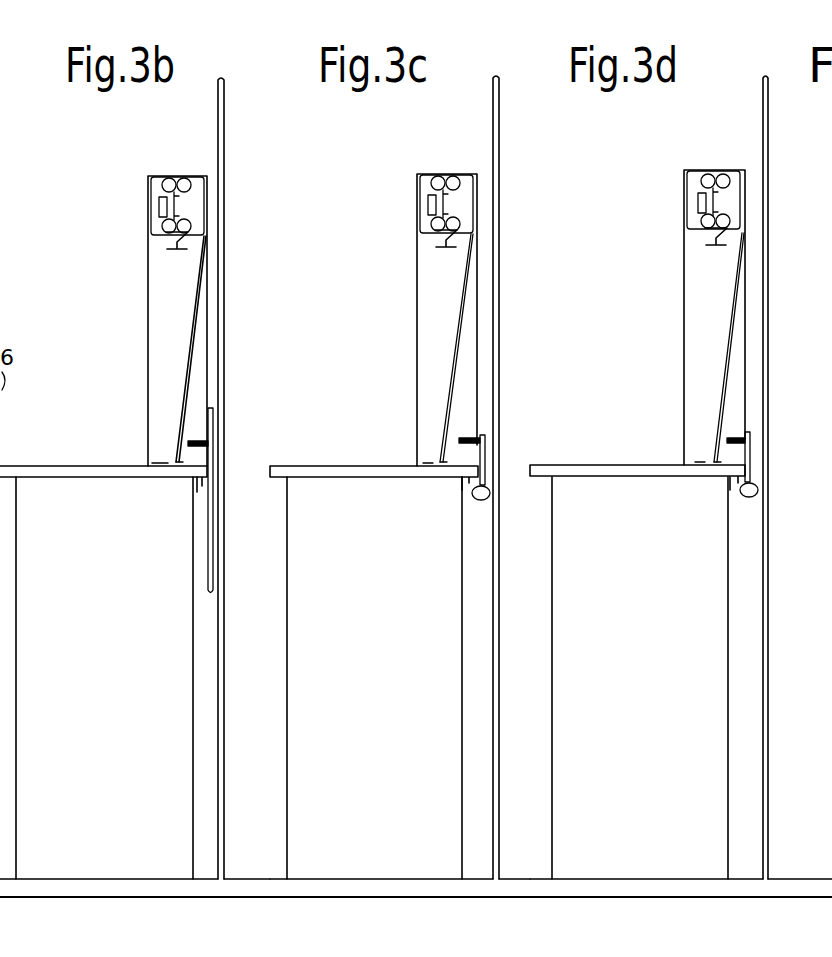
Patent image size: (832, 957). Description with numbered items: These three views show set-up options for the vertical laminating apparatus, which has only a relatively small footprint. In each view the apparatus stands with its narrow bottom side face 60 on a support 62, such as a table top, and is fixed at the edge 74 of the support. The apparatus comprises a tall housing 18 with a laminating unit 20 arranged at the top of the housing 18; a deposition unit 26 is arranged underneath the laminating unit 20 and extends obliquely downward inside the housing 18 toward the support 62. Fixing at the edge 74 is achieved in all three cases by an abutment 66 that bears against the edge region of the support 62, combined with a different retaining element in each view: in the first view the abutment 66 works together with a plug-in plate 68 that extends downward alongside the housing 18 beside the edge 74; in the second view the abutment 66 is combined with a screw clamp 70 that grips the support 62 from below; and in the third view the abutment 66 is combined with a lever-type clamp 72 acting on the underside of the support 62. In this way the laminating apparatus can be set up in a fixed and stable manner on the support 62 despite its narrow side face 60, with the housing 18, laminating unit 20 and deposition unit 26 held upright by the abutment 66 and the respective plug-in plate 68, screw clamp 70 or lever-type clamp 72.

In FIG. 3B, the housing 18 is at (148, 306).
In FIG. 3C, the housing 18 is at (417, 303).
In FIG. 3D, the housing 18 is at (684, 304).
In FIG. 3B, the laminating unit 20 is at (158, 205).
In FIG. 3C, the laminating unit 20 is at (427, 205).
In FIG. 3D, the laminating unit 20 is at (696, 204).
In FIG. 3B, the deposition unit 26 is at (190, 346).
In FIG. 3C, the deposition unit 26 is at (456, 344).
In FIG. 3D, the deposition unit 26 is at (733, 353).
In FIG. 3B, the narrow bottom side face 60 is at (178, 476).
In FIG. 3C, the narrow bottom side face 60 is at (447, 471).
In FIG. 3D, the narrow bottom side face 60 is at (716, 468).
In FIG. 3B, the support 62 is at (87, 466).
In FIG. 3C, the support 62 is at (363, 466).
In FIG. 3D, the support 62 is at (643, 465).
In FIG. 3B, the abutment 66 is at (212, 446).
In FIG. 3C, the abutment 66 is at (485, 450).
In FIG. 3D, the abutment 66 is at (750, 448).
In FIG. 3B, the plug-in plate 68 is at (245, 478).
In FIG. 3C, the screw clamp 70 is at (485, 465).
In FIG. 3D, the lever-type clamp 72 is at (752, 467).
In FIG. 3B, the edge of the support 74 is at (197, 490).
In FIG. 3C, the edge of the support 74 is at (462, 480).
In FIG. 3D, the edge of the support 74 is at (731, 480).